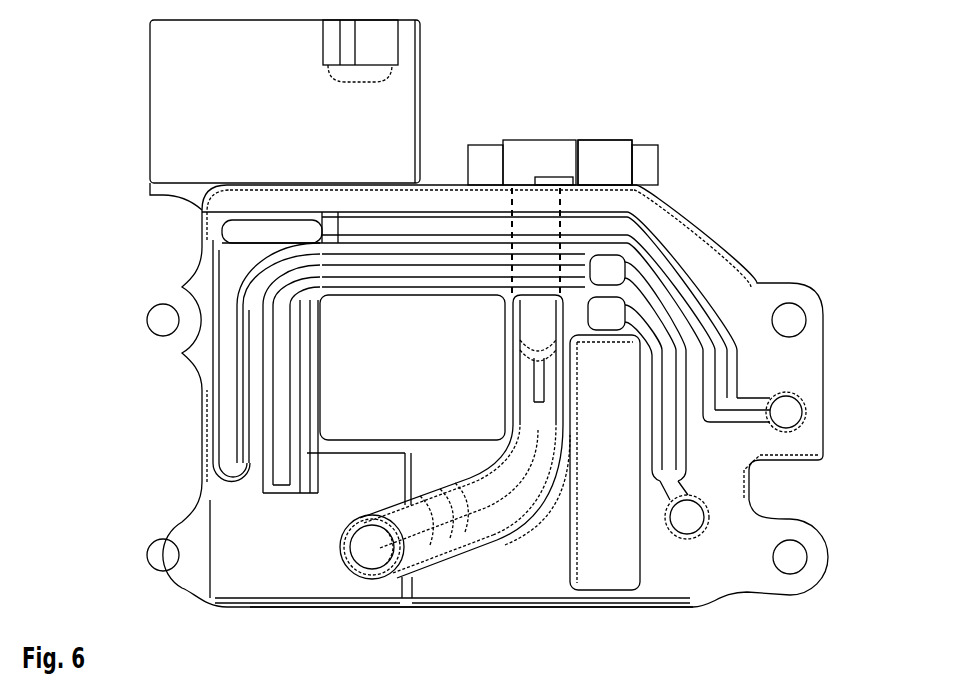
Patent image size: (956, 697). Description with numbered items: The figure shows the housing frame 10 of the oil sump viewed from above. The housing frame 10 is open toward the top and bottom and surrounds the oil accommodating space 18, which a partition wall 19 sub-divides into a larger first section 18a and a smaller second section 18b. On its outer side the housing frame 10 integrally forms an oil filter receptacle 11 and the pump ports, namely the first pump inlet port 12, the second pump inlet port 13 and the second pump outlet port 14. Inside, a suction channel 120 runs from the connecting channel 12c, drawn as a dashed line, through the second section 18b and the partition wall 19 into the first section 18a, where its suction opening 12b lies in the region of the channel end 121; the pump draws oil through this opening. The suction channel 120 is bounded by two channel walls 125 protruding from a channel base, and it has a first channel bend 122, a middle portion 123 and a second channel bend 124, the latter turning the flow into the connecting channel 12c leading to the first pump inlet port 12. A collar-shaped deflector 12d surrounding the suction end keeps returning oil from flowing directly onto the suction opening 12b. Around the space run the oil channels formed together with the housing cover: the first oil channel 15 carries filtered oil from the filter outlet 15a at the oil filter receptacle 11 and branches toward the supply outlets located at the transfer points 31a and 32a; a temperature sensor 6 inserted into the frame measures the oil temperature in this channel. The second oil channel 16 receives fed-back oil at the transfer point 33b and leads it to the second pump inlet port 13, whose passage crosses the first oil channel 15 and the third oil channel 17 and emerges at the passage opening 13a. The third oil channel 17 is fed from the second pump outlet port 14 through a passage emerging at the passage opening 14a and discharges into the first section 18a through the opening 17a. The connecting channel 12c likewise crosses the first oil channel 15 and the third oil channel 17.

The temperature sensor 6 is at (795, 420).
The housing frame 10 is at (595, 212).
The oil filter receptacle 11 is at (197, 124).
The first pump inlet port 12 is at (527, 140).
The suction opening 12b is at (367, 557).
The connecting channel 12c is at (525, 233).
The deflector 12d is at (353, 513).
The second pump inlet port 13 is at (607, 145).
The second pump outlet port 14 is at (605, 121).
The passage opening 13a is at (608, 312).
The passage opening 14a is at (602, 277).
The first oil channel 15 is at (727, 247).
The filter outlet 15a is at (260, 224).
The second oil channel 16 is at (668, 437).
The third oil channel 17 is at (283, 304).
The opening 17a is at (283, 494).
The oil accommodating space 18 is at (622, 534).
The first section 18a is at (260, 580).
The second section 18b is at (585, 553).
The partition wall 19 is at (367, 445).
The transfer point 31a is at (232, 466).
The transfer point 32a is at (725, 417).
The transfer point 33b is at (688, 520).
The suction channel 120 is at (520, 523).
The channel end 121 is at (352, 553).
The first channel bend 122 is at (455, 517).
The middle portion 123 is at (530, 465).
The second channel bend 124 is at (535, 377).
The channel walls 125 is at (500, 456).